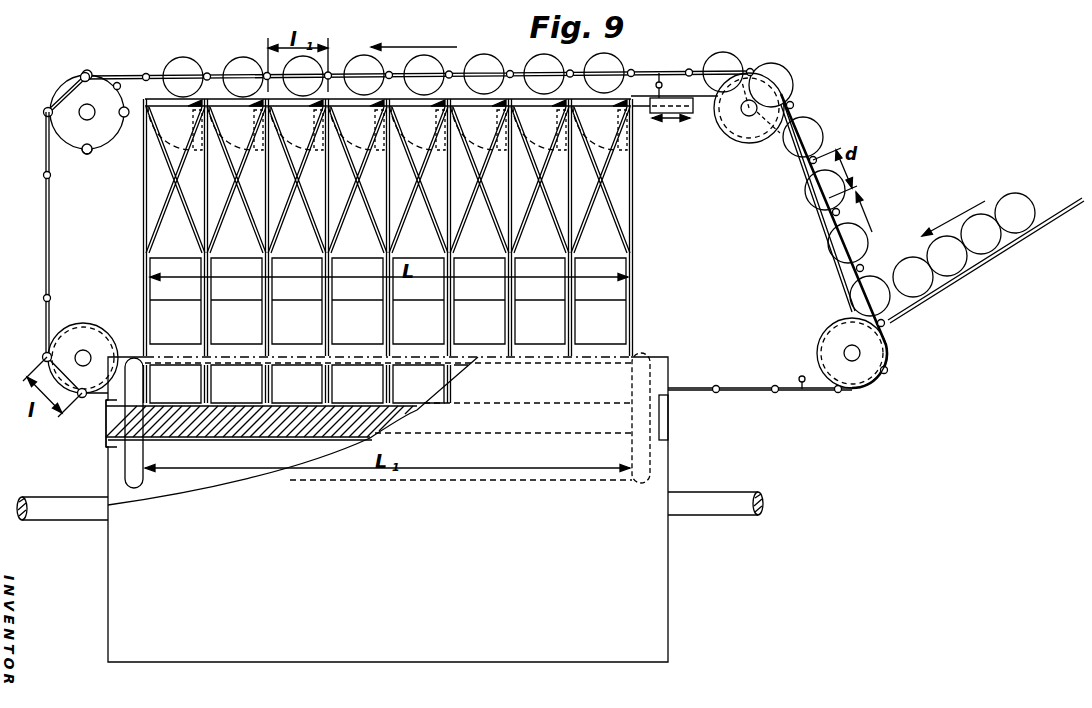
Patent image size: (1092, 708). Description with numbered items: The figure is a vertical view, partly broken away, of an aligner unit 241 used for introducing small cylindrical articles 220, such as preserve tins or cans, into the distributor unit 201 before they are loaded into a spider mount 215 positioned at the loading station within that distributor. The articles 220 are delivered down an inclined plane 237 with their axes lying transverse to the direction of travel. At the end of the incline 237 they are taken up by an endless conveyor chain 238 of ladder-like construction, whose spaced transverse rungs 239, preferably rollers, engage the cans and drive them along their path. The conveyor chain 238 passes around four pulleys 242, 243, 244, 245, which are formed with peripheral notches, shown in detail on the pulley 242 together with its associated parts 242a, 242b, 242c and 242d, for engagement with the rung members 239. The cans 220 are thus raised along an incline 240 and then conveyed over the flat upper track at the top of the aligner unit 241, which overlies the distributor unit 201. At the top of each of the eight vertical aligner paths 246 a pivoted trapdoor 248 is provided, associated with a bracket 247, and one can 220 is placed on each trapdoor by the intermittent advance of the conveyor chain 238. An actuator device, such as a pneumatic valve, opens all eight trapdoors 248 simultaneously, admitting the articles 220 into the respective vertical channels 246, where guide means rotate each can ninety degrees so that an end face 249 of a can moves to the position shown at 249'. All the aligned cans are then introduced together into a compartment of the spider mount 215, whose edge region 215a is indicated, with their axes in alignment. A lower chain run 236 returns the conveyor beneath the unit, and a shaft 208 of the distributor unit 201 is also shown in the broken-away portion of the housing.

The distributor unit 201 is at (617, 544).
The shaft 208 is at (58, 511).
The spider mount 215 is at (200, 462).
The web edge step 215a is at (125, 428).
The cylindrical articles 220 is at (1012, 207).
The lower chain run 236 is at (741, 326).
The inclined plane 237 is at (993, 256).
The endless conveyor chain 238 is at (857, 270).
The transverse rungs 239 is at (858, 266).
The incline 240 is at (824, 216).
The aligner unit 241 is at (460, 116).
The pulley 242 is at (93, 98).
The pulley arm 242a is at (68, 78).
The pivot link 242b is at (53, 123).
The pulley notch 242c is at (86, 151).
The pulley pin 242d is at (124, 108).
The pulley 243 is at (744, 128).
The pulley 244 is at (858, 370).
The pulley 245 is at (78, 337).
The vertical aligner paths 246 is at (222, 243).
The bracket 247 is at (658, 71).
The pivoted trapdoor 248 is at (612, 107).
The end face 249 is at (439, 67).
The rotated end face position 249' is at (306, 443).